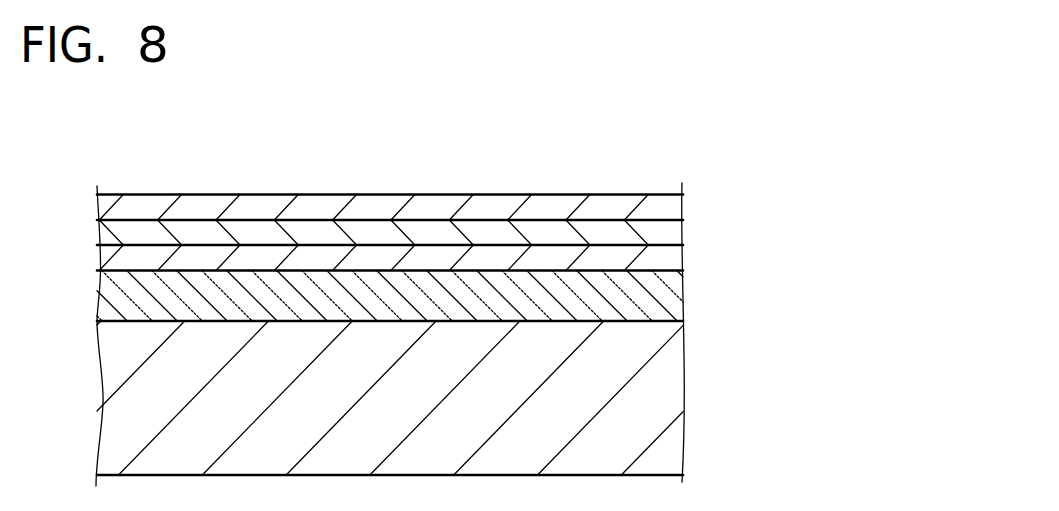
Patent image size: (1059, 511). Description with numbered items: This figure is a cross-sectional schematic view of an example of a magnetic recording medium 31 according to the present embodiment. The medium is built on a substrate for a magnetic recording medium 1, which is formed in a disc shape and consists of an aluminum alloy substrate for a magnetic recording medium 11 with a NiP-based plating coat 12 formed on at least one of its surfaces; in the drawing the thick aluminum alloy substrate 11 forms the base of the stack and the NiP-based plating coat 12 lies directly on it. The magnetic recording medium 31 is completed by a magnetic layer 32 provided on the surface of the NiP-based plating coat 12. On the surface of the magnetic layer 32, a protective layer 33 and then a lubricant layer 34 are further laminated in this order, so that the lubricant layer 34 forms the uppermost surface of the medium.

The substrate for a magnetic recording medium 1 is at (760, 282).
The aluminum alloy substrate for a magnetic recording medium 11 is at (660, 353).
The NiP-based plating coat 12 is at (660, 297).
The magnetic recording medium 31 is at (612, 106).
The magnetic layer 32 is at (660, 255).
The protective layer 33 is at (665, 232).
The lubricant layer 34 is at (668, 202).